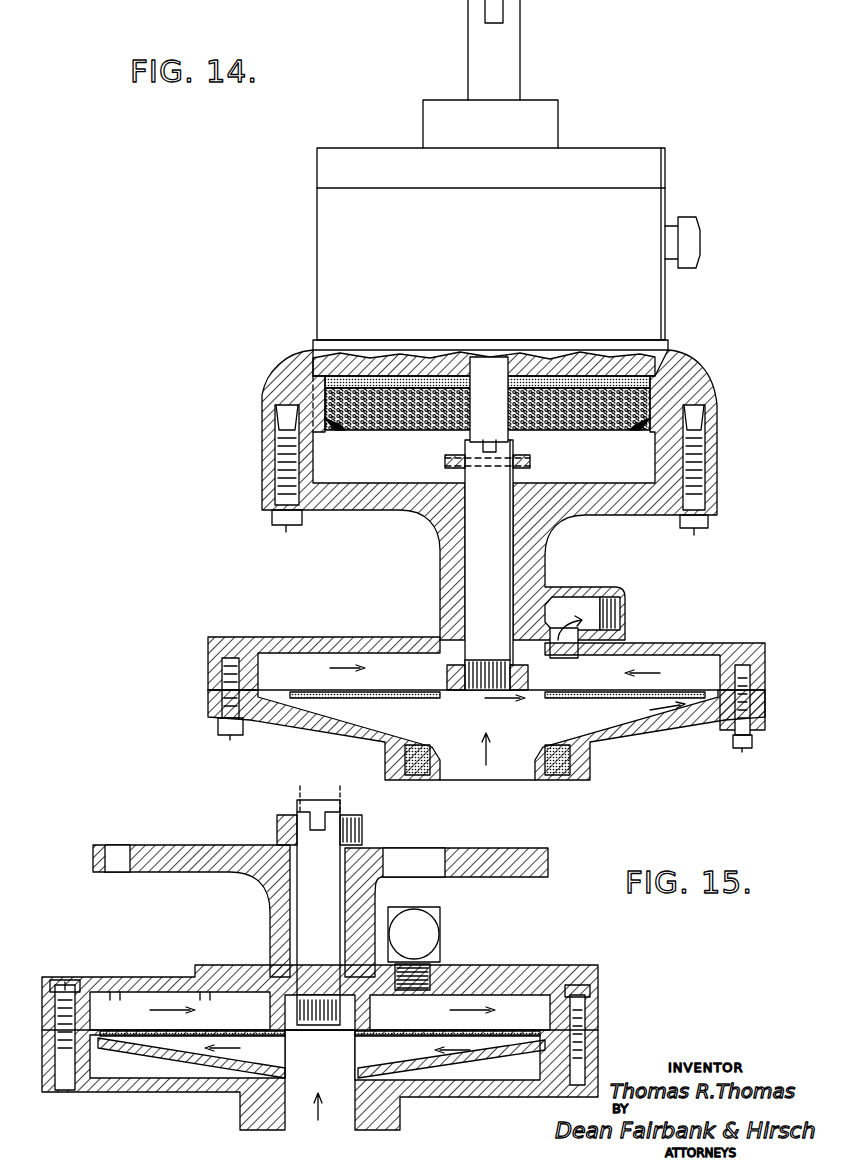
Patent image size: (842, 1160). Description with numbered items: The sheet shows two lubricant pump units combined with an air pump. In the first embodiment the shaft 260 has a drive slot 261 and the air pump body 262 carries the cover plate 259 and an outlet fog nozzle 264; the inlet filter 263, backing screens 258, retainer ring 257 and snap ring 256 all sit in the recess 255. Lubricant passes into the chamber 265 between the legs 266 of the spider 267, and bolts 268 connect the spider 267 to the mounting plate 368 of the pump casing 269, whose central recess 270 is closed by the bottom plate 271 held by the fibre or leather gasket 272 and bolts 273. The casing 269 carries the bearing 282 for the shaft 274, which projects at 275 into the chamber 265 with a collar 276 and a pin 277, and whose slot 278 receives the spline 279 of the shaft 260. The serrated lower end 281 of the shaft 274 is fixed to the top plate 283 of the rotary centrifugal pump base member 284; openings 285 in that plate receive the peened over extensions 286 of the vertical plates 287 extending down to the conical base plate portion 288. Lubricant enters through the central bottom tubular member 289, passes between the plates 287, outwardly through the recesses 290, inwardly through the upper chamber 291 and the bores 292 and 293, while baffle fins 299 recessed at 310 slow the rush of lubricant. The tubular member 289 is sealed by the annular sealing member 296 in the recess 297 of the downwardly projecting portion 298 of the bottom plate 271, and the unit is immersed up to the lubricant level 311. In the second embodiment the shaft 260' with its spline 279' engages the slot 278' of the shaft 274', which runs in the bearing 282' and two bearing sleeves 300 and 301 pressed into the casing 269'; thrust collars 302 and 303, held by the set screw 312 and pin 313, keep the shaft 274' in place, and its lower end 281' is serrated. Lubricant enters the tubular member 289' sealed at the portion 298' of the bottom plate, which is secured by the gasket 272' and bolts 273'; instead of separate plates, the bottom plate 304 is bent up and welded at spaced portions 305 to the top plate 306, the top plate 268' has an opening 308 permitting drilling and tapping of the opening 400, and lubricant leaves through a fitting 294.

In FIG. 14, the recess 255 is at (330, 362).
In FIG. 14, the snap ring 256 is at (333, 432).
In FIG. 14, the retainer ring 257 is at (340, 430).
In FIG. 14, the backing screens 258 is at (400, 375).
In FIG. 14, the cover plate 259 is at (660, 160).
In FIG. 14, the shaft 260 is at (518, 50).
In FIG. 14, the drive slot 261 is at (505, 12).
In FIG. 14, the air pump body 262 is at (645, 208).
In FIG. 14, the inlet filter 263 is at (450, 375).
In FIG. 14, the outlet fog nozzle 264 is at (700, 243).
In FIG. 14, the chamber 265 is at (418, 512).
In FIG. 14, the legs 266 is at (270, 455).
In FIG. 14, the spider 267 is at (312, 400).
In FIG. 14, the bolts 268 is at (511, 532).
In FIG. 14, the pump casing 269 is at (486, 667).
In FIG. 14, the central recess 270 is at (288, 652).
In FIG. 14, the bottom plate 271 is at (262, 720).
In FIG. 14, the fibre or leather gasket 272 is at (201, 699).
In FIG. 14, the bolts 273 is at (189, 737).
In FIG. 14, the shaft 274 is at (526, 552).
In FIG. 14, the projecting end 275 is at (513, 449).
In FIG. 14, the collar 276 is at (445, 468).
In FIG. 14, the pin 277 is at (530, 467).
In FIG. 14, the slot 278 is at (450, 446).
In FIG. 14, the spline 279 is at (489, 404).
In FIG. 14, the lower end 281 is at (487, 692).
In FIG. 14, the bearing 282 is at (411, 553).
In FIG. 14, the top plate 283 is at (382, 690).
In FIG. 14, the rotary centrifugal pump base member 284 is at (487, 755).
In FIG. 14, the openings 285 is at (258, 690).
In FIG. 14, the peened over extensions 286 is at (498, 665).
In FIG. 14, the vertical plates 287 is at (597, 694).
In FIG. 14, the conical base plate portion 288 is at (600, 732).
In FIG. 14, the central bottom tubular member 289 is at (486, 793).
In FIG. 14, the recesses 290 is at (700, 732).
In FIG. 14, the upper chamber 291 is at (690, 648).
In FIG. 14, the bore 292 is at (563, 648).
In FIG. 14, the bore 293 is at (585, 600).
In FIG. 14, the annular sealing member 296 is at (408, 782).
In FIG. 14, the recess 297 is at (400, 758).
In FIG. 14, the downwardly projecting portion 298 is at (591, 793).
In FIG. 14, the baffle fins 299 is at (325, 668).
In FIG. 14, the recess 310 is at (432, 655).
In FIG. 14, the lubricant level 311 is at (245, 290).
In FIG. 14, the mounting plate 368 is at (640, 515).
In FIG. 15, the shaft 260' is at (292, 790).
In FIG. 15, the spline 279' is at (295, 809).
In FIG. 15, the slot 278' is at (262, 826).
In FIG. 15, the thrust collar 302 is at (277, 840).
In FIG. 15, the set screw 312 is at (360, 826).
In FIG. 15, the shaft 274' is at (363, 900).
In FIG. 15, the opening 308 is at (440, 851).
In FIG. 15, the top plate 268' is at (191, 911).
In FIG. 15, the bearing 282' is at (243, 906).
In FIG. 15, the bearing sleeve 300 is at (376, 889).
In FIG. 15, the casing 269' is at (320, 1031).
In FIG. 15, the pin 313 is at (270, 975).
In FIG. 15, the lower end 281' is at (318, 994).
In FIG. 15, the fitting 294 is at (425, 929).
In FIG. 15, the bearing sleeve 301 is at (438, 948).
In FIG. 15, the opening 400 is at (434, 981).
In FIG. 15, the thrust collar 303 is at (370, 1020).
In FIG. 15, the top plate 306 is at (520, 1030).
In FIG. 15, the gasket 272' is at (616, 1035).
In FIG. 15, the central bottom tubular member 289' is at (220, 1079).
In FIG. 15, the spaced portions 305 is at (490, 1048).
In FIG. 15, the bolts 273' is at (66, 1050).
In FIG. 15, the downwardly projecting portion 298' is at (212, 1107).
In FIG. 15, the bottom plate 304 is at (430, 1072).